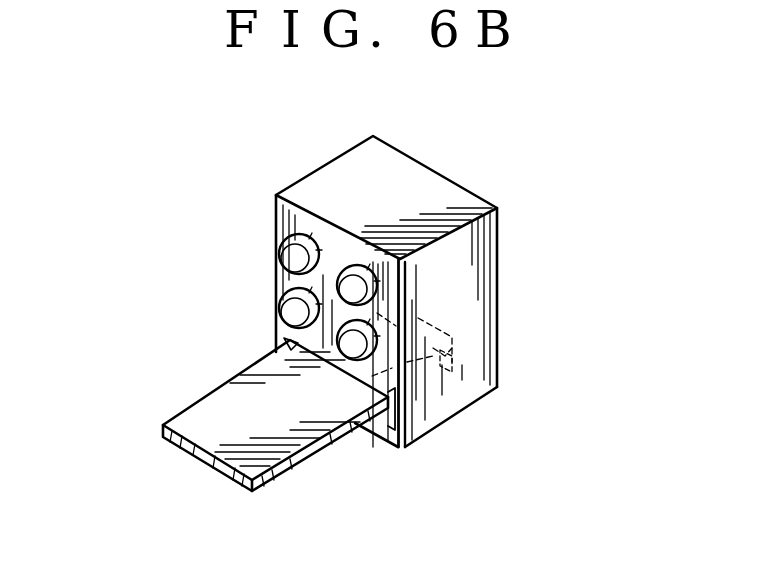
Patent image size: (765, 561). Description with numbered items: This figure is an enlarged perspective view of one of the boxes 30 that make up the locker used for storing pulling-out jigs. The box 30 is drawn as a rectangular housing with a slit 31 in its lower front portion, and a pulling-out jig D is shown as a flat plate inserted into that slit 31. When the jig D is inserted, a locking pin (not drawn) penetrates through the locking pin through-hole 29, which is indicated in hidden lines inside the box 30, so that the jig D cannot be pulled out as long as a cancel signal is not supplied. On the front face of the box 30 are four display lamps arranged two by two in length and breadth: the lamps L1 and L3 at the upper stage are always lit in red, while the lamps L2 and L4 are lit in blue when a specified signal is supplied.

The box 30 is at (438, 197).
The locking pin through-hole 29 is at (413, 362).
The slit 31 is at (380, 418).
The display lamp L1 is at (373, 286).
The display lamp L2 is at (372, 324).
The display lamp L3 is at (280, 258).
The display lamp L4 is at (280, 312).
The pulling-out jig D is at (223, 414).